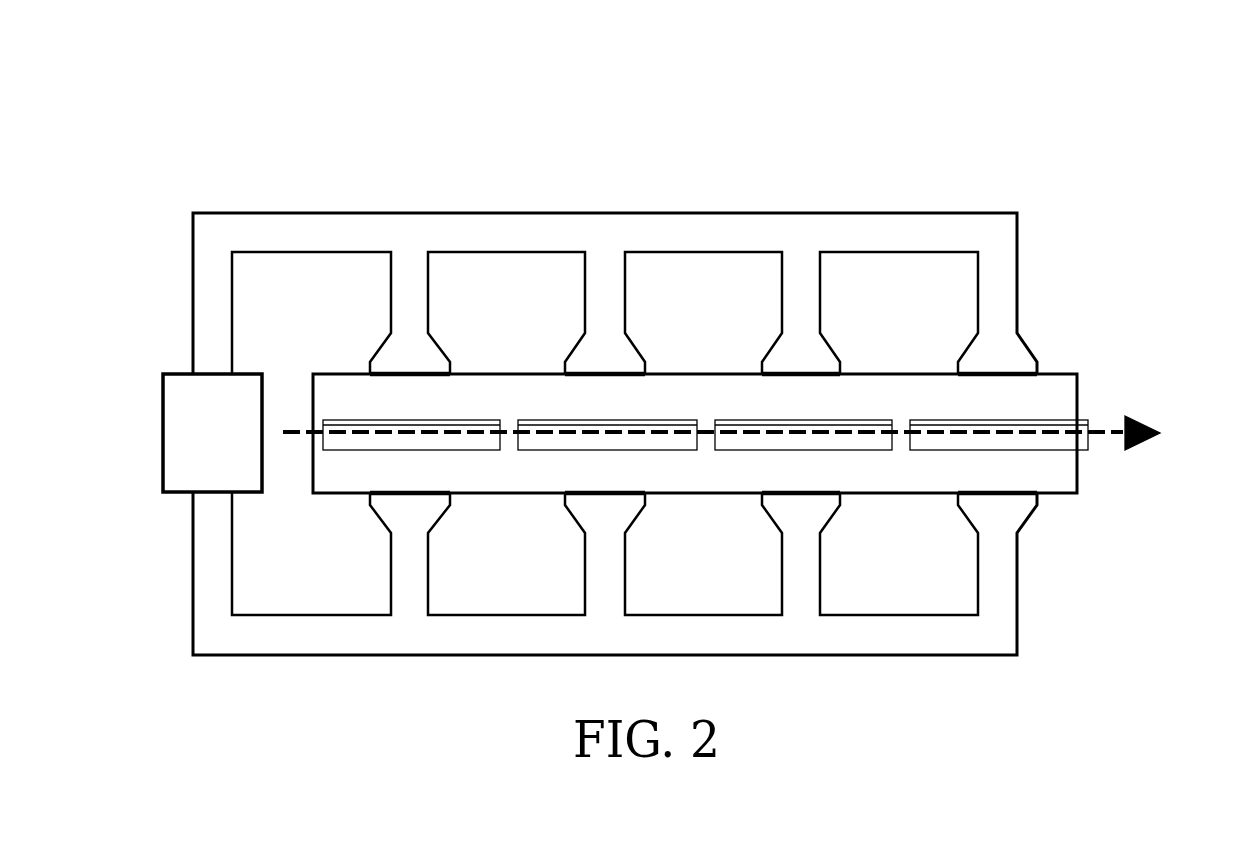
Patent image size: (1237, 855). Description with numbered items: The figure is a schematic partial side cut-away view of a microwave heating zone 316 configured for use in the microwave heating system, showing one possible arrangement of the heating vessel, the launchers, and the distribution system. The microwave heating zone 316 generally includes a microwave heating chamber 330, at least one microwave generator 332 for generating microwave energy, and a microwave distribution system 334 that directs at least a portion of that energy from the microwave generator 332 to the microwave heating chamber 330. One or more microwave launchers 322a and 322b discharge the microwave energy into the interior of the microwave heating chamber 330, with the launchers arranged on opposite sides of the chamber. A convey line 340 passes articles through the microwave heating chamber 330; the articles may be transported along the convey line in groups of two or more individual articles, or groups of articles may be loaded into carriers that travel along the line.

The microwave heating zone 316 is at (946, 118).
The microwave launcher 322a is at (1020, 346).
The microwave launcher 322b is at (1018, 518).
The microwave heating chamber 330 is at (717, 495).
The microwave generator 332 is at (174, 373).
The microwave distribution system 334 is at (332, 622).
The convey line 340 is at (1097, 436).